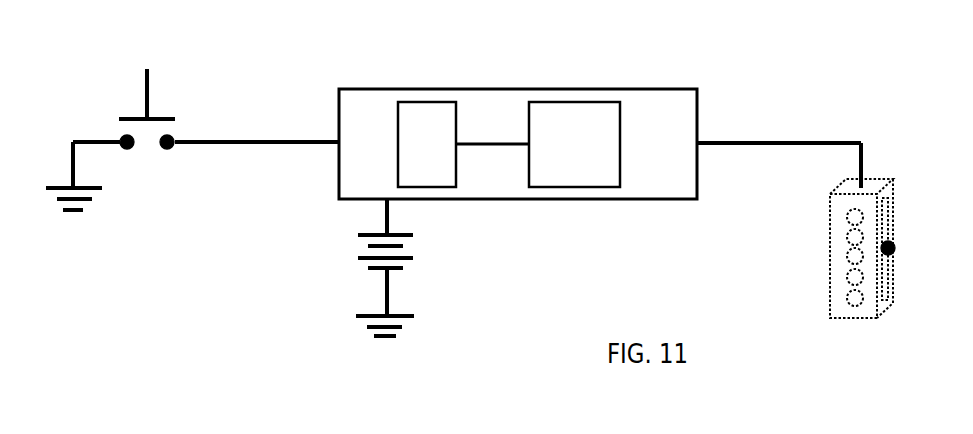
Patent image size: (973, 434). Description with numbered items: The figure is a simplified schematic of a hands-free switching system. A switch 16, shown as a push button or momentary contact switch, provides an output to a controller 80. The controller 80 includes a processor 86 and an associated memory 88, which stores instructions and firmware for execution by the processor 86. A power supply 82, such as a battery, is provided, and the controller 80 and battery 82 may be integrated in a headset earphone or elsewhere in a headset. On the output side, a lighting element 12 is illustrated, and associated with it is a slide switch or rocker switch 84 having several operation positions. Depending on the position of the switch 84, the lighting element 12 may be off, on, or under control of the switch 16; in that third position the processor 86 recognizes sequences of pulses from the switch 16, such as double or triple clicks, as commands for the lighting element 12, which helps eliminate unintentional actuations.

The lighting element 12 is at (828, 230).
The switch 16 is at (152, 90).
The controller 80 is at (544, 125).
The power supply 82 is at (417, 269).
The slide switch or rocker switch 84 is at (895, 245).
The processor 86 is at (427, 144).
The memory 88 is at (574, 144).